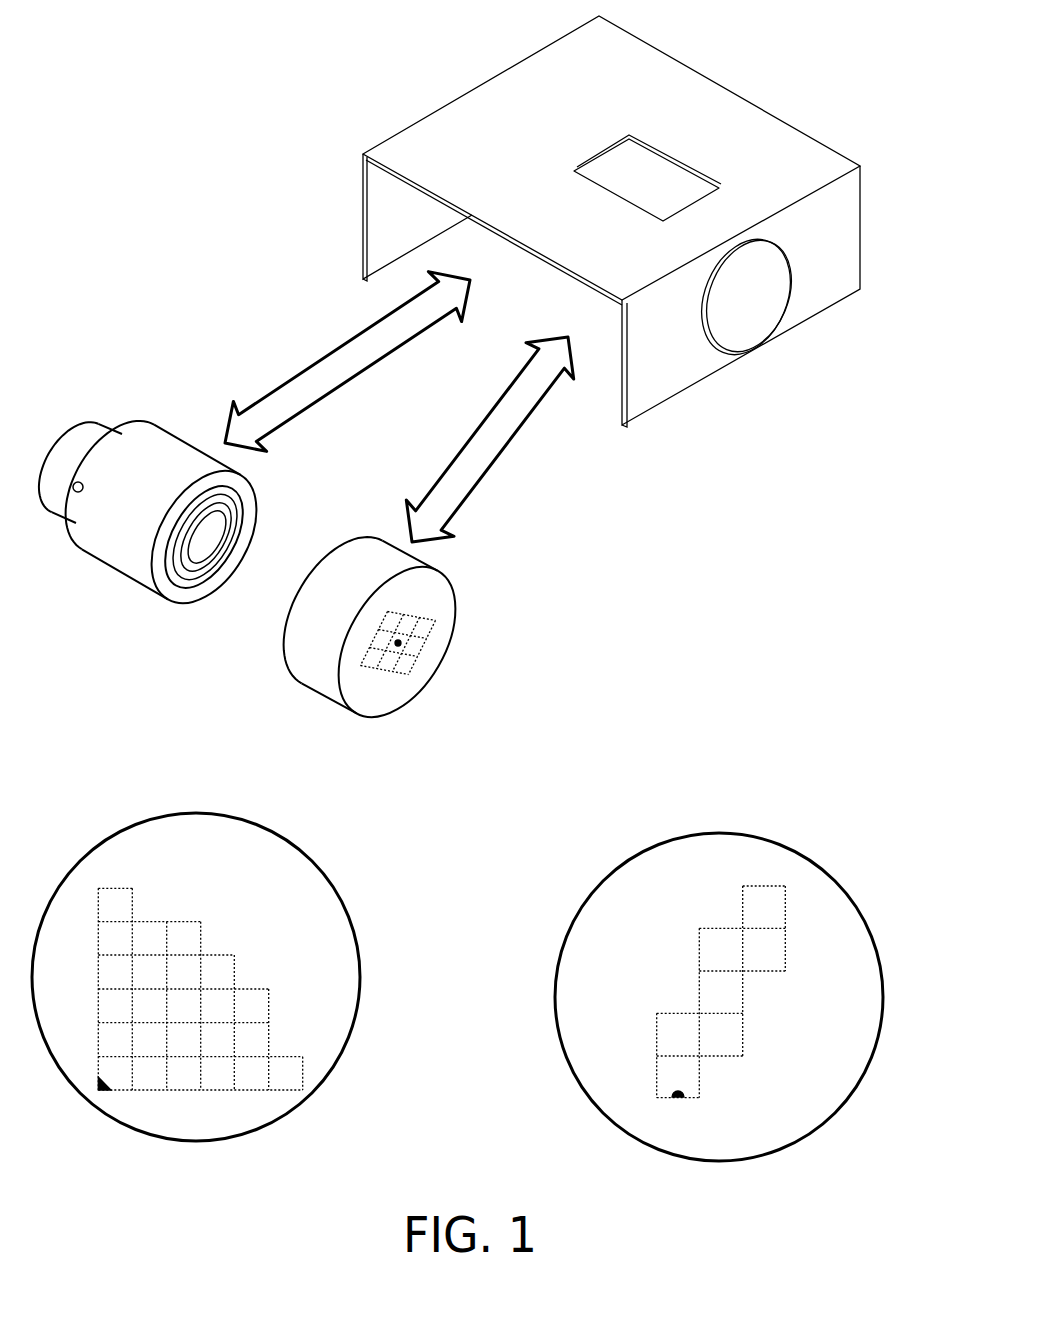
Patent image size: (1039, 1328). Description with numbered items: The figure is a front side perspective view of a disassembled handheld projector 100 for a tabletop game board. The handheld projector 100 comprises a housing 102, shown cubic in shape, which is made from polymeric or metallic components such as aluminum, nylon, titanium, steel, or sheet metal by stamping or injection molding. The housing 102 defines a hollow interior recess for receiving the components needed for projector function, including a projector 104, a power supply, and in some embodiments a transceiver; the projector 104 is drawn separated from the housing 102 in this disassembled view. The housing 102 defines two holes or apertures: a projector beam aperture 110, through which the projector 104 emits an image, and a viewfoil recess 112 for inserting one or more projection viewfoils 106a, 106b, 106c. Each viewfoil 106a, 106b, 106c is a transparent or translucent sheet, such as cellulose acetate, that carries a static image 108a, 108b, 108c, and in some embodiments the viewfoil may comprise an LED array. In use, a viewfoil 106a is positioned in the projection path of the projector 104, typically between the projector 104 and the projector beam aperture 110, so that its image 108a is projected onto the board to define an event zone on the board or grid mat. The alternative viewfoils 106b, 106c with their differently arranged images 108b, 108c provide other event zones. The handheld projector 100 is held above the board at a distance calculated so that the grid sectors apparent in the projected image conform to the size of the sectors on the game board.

The handheld projector 100 is at (160, 62).
The housing 102 is at (490, 176).
The projector 104 is at (145, 468).
The projection viewfoil 106a is at (427, 589).
The projection viewfoil 106b is at (228, 971).
The projection viewfoil 106c is at (743, 974).
The image 108a is at (397, 630).
The image 108b is at (178, 967).
The image 108c is at (758, 907).
The projector beam aperture 110 is at (722, 312).
The viewfoil recess 112 is at (638, 186).